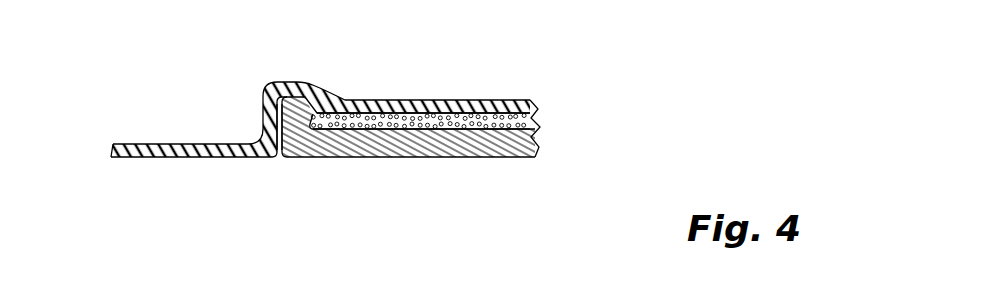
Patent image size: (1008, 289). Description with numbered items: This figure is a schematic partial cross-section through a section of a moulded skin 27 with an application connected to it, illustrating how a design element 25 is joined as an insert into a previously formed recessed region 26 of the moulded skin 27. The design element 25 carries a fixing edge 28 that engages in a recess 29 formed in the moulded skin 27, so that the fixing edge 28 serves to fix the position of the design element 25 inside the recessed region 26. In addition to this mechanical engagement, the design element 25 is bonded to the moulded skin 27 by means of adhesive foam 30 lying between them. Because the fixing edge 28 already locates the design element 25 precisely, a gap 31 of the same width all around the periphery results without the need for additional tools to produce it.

The design element 25 is at (407, 159).
The recessed region 26 is at (555, 133).
The moulded skin 27 is at (207, 142).
The fixing edge 28 is at (300, 110).
The recess 29 is at (278, 110).
The adhesive foam 30 is at (463, 116).
The gap 31 is at (280, 156).